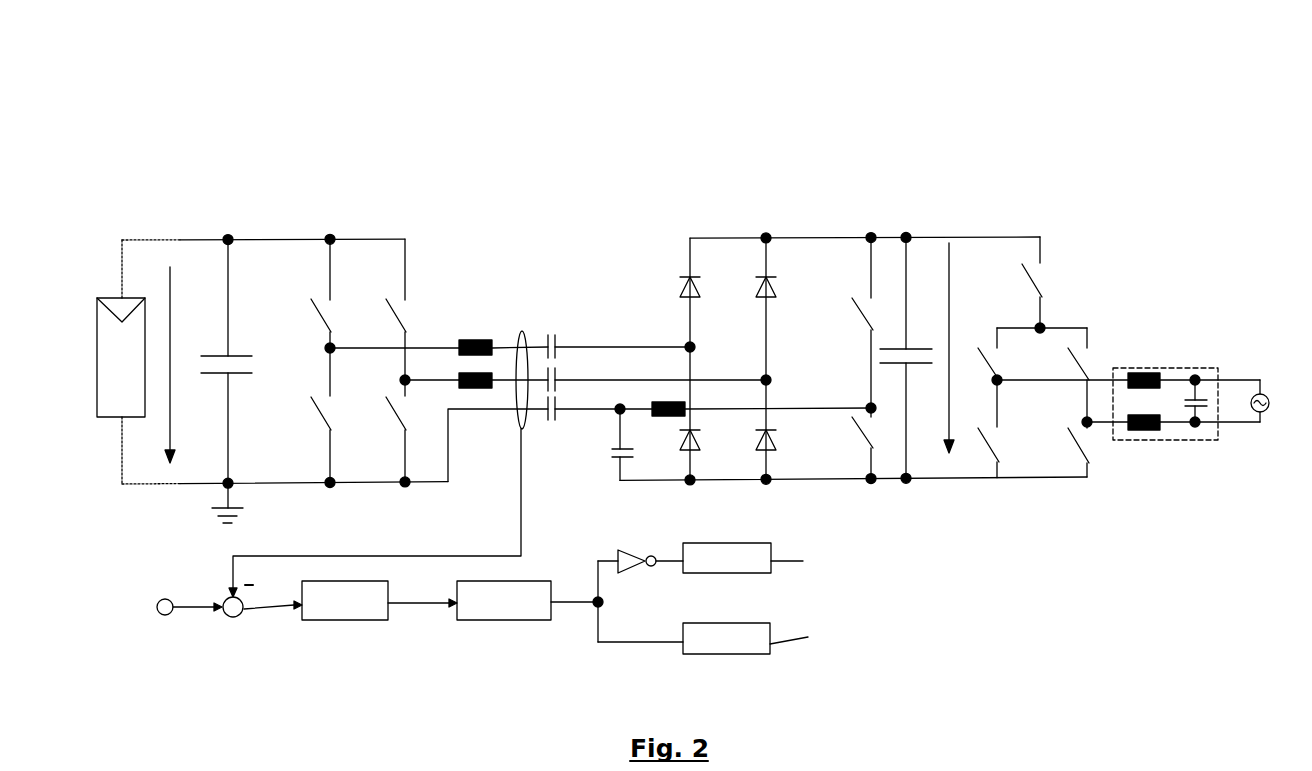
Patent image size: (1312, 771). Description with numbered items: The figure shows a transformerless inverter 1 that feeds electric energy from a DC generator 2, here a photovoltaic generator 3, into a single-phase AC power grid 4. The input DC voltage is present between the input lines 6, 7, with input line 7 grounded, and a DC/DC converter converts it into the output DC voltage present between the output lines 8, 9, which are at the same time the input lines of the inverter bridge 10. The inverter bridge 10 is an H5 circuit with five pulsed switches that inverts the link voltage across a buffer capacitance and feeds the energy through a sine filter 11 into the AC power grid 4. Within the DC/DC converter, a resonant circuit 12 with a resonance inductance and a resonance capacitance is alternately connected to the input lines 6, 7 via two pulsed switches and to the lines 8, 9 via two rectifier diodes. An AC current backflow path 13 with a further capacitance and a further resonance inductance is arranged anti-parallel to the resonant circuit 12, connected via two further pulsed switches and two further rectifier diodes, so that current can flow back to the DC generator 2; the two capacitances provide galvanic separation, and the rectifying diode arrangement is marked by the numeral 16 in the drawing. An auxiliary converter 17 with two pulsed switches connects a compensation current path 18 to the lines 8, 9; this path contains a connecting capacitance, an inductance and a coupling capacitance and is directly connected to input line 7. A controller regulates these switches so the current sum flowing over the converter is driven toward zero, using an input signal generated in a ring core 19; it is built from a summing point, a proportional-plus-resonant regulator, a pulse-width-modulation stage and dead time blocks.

The inverter 1 is at (617, 212).
The DC generator 2 is at (81, 325).
The photovoltaic generator 3 is at (97, 372).
The AC power grid 4 is at (1263, 393).
The input line 6 is at (195, 240).
The input line 7 is at (188, 484).
The output line 8 is at (822, 238).
The output line 9 is at (817, 479).
The inverter bridge 10 is at (1076, 268).
The sine filter 11 is at (1163, 335).
The resonant circuit 12 is at (499, 325).
The AC current backflow path 13 is at (472, 364).
The rectifier 16 is at (601, 329).
The auxiliary converter 17 is at (918, 215).
The compensation current path 18 is at (484, 407).
The ring core 19 is at (521, 332).